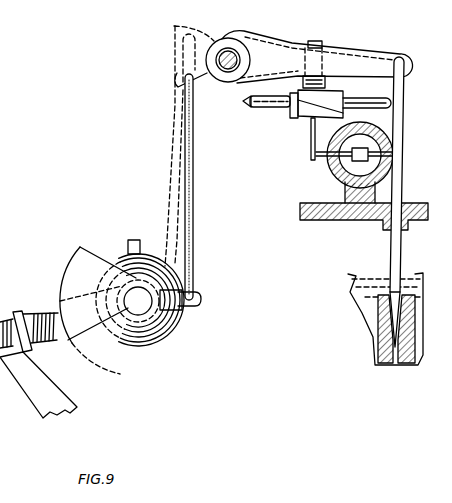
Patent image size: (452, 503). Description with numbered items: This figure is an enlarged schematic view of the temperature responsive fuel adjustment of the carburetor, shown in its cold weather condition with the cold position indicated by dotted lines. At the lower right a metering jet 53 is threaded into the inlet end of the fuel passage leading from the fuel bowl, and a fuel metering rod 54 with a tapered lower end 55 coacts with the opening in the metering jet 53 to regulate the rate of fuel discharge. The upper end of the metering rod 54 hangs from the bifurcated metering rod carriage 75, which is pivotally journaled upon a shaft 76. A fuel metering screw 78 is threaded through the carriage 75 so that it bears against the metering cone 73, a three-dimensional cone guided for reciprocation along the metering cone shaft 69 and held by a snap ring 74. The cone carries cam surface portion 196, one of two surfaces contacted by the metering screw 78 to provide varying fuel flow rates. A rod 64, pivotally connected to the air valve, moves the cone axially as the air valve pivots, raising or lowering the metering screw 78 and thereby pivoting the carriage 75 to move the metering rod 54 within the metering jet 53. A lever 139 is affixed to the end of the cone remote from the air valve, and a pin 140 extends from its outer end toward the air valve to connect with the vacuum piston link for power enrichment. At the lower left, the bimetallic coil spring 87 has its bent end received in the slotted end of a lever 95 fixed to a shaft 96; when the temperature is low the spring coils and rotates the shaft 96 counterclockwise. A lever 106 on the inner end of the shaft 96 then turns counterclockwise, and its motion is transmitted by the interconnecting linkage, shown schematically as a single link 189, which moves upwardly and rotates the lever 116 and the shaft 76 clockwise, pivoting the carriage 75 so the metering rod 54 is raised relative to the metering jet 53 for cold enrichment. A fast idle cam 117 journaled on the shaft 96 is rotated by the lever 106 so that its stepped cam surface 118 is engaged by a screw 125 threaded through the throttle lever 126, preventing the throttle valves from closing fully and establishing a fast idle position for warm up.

The metering jet 53 is at (376, 290).
The fuel metering rod 54 is at (400, 272).
The tapered lower end 55 is at (401, 120).
The rod 64 is at (360, 96).
The metering cone shaft 69 is at (252, 110).
The metering cone 73 is at (320, 111).
The snap ring 74 is at (293, 96).
The metering rod carriage 75 is at (382, 53).
The shaft 76 is at (241, 59).
The fuel metering screw 78 is at (323, 63).
The bimetallic coil spring 87 is at (178, 320).
The lever 95 is at (350, 120).
The shaft 96 is at (141, 308).
The lever 106 is at (201, 298).
The lever 116 is at (180, 82).
The fast idle cam 117 is at (64, 276).
The stepped cam surface 118 is at (33, 348).
The screw 125 is at (42, 314).
The throttle lever 126 is at (44, 378).
The lever 139 is at (311, 144).
The pin 140 is at (330, 162).
The link 189 is at (194, 252).
The cam surface portion 196 is at (304, 120).